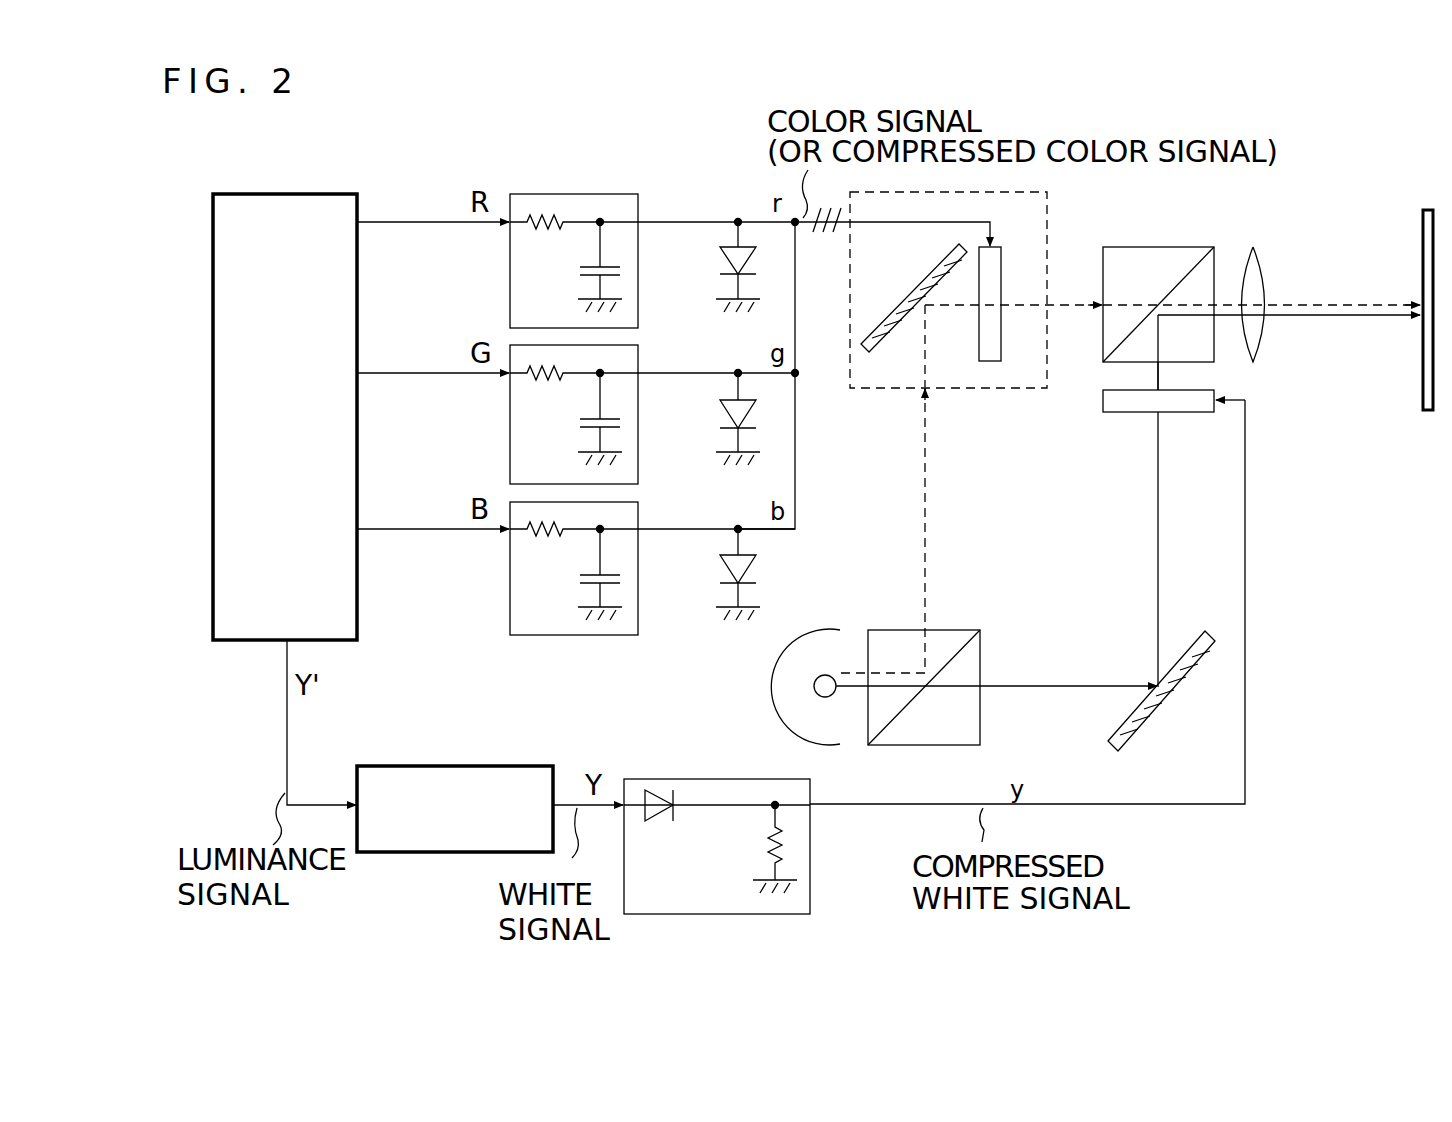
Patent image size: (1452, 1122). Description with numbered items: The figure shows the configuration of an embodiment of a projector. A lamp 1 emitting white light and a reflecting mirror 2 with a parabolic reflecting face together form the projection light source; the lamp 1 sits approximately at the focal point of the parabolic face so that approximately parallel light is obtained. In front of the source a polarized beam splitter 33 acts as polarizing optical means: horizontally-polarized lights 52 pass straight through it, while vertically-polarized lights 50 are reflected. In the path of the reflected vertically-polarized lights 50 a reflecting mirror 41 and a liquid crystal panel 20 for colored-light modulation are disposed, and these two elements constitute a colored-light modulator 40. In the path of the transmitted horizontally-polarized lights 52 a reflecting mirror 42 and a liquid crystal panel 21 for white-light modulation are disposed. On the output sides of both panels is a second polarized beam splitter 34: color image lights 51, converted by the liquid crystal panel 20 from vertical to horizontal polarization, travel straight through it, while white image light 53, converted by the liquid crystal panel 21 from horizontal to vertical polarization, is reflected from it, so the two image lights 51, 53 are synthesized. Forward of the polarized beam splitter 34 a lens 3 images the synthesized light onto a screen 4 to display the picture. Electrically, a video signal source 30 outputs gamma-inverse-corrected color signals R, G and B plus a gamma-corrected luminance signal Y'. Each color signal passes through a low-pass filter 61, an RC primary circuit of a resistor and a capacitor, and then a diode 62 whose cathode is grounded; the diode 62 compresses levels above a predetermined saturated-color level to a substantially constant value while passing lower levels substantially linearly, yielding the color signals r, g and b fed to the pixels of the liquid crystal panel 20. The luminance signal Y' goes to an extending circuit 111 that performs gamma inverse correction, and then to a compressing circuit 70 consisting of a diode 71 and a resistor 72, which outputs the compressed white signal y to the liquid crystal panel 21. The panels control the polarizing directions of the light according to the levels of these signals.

The lamp 1 is at (832, 676).
The reflecting mirror 2 is at (782, 708).
The lens 3 is at (1262, 268).
The screen 4 is at (1420, 393).
The liquid crystal panel for colored-light modulation 20 is at (978, 330).
The liquid crystal panel for white-light modulation 21 is at (1118, 412).
The video signal source 30 is at (248, 640).
The polarized beam splitter 33 is at (981, 726).
The polarized beam splitter 34 is at (1152, 247).
The colored-light modulator 40 is at (868, 392).
The reflecting mirror 41 is at (895, 322).
The reflecting mirror 42 is at (1150, 715).
The vertically-polarized lights 50 is at (927, 537).
The color image lights 51 is at (1072, 302).
The horizontally-polarized lights 52 is at (1047, 684).
The white image light 53 is at (1160, 376).
The low-pass filter 61 is at (510, 262).
The diode 62 is at (722, 258).
The compressing circuit 70 is at (746, 846).
The diode 71 is at (660, 820).
The resistor 72 is at (760, 840).
The extending circuit 111 is at (472, 766).